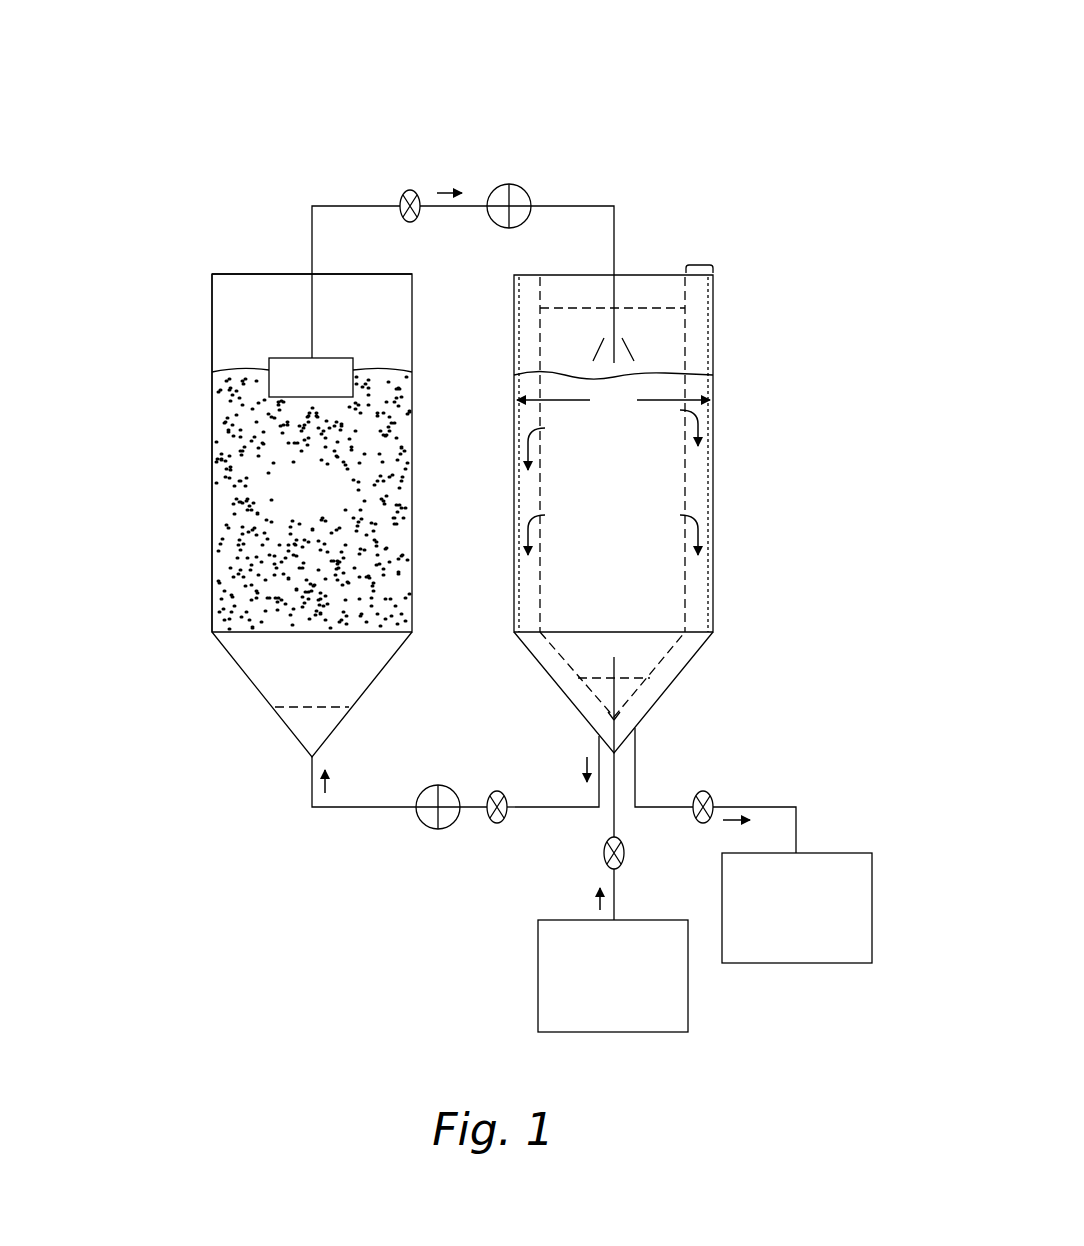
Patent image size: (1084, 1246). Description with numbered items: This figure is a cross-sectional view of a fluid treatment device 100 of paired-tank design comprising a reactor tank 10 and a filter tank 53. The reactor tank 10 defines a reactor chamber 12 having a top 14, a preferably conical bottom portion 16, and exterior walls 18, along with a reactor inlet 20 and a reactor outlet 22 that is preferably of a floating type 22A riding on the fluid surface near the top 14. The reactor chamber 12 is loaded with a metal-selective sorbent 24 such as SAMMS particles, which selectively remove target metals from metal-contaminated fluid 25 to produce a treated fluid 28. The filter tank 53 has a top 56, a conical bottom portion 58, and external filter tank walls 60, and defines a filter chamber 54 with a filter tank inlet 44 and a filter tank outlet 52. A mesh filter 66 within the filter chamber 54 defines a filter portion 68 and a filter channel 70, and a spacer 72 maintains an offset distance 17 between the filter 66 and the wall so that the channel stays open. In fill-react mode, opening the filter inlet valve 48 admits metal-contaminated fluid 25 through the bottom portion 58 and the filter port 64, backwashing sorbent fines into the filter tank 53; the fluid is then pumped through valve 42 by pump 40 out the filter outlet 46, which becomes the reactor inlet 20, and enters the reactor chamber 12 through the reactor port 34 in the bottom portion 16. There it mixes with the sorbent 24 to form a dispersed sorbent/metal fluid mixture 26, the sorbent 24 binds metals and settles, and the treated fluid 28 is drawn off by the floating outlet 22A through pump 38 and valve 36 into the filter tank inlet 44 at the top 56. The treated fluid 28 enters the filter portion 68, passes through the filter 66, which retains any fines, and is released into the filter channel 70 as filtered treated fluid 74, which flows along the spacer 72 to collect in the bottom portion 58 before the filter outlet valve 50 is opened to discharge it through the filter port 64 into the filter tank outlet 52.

The fluid treatment device 100 is at (170, 95).
The reactor tank 10 is at (193, 349).
The reactor chamber 12 is at (228, 318).
The top 14 is at (266, 274).
The bottom portion 16 is at (240, 670).
The offset distance 17 is at (698, 249).
The exterior walls 18 is at (212, 408).
The reactor inlet 20 is at (305, 757).
The reactor outlet 22 is at (309, 272).
The floating type outlet 22A is at (287, 394).
The metal-selective sorbent 24 is at (246, 530).
The metal-contaminated fluid 25 is at (247, 437).
The dispersed sorbent/metal fluid mixture 26 is at (298, 511).
The treated fluid 28 is at (596, 350).
The reactor port 34 is at (310, 715).
The valve 36 is at (405, 190).
The pump 38 is at (500, 185).
The pump 40 is at (433, 830).
The valve 42 is at (495, 823).
The filter tank inlet 44 is at (618, 272).
The filter outlet 46 is at (595, 738).
The filter inlet valve 48 is at (603, 853).
The filter outlet valve 50 is at (708, 796).
The filter tank outlet 52 is at (638, 730).
The filter tank 53 is at (746, 346).
The filter chamber 54 is at (598, 416).
The top 56 is at (655, 275).
The bottom portion 58 is at (685, 670).
The external filter tank walls 60 is at (712, 406).
The filter port 64 is at (645, 702).
The filter 66 is at (686, 590).
The filter portion 68 is at (628, 604).
The filter channel 70 is at (700, 491).
The spacer 72 is at (545, 295).
The filtered treated fluid 74 is at (782, 952).